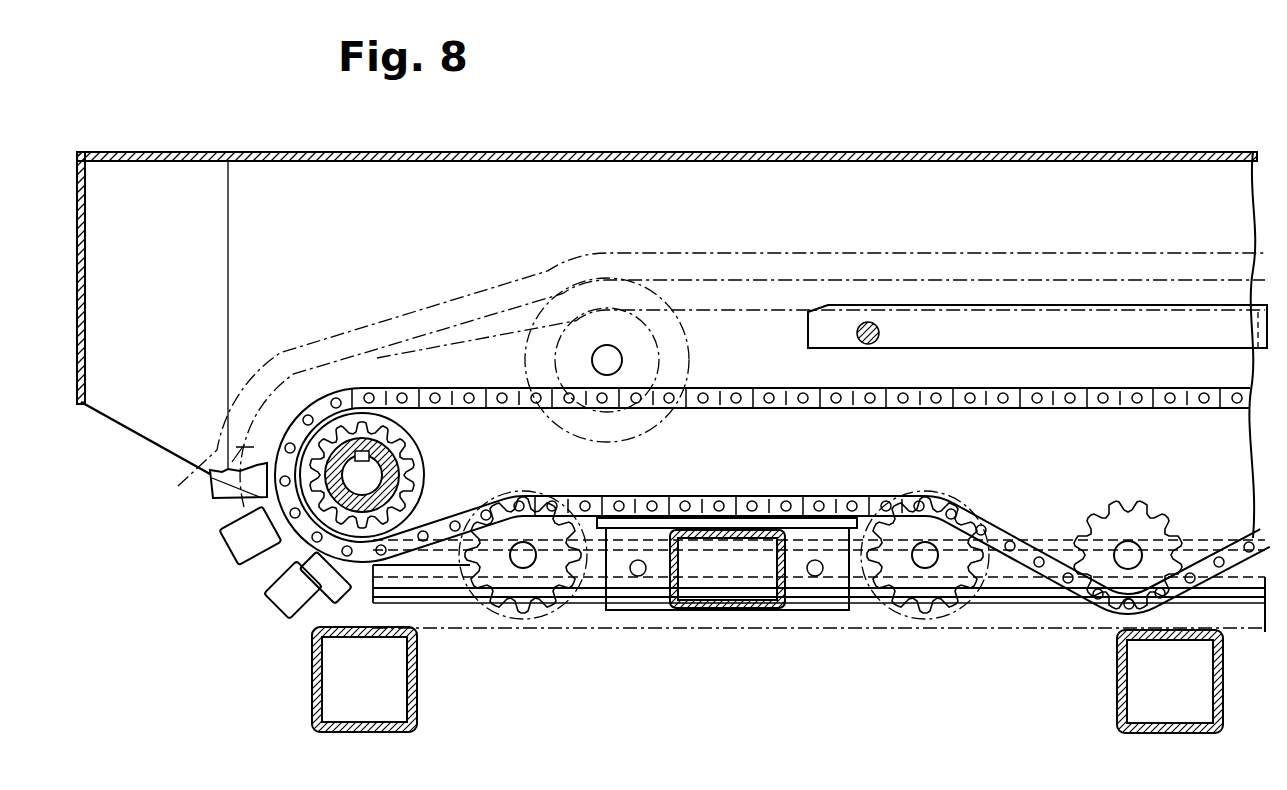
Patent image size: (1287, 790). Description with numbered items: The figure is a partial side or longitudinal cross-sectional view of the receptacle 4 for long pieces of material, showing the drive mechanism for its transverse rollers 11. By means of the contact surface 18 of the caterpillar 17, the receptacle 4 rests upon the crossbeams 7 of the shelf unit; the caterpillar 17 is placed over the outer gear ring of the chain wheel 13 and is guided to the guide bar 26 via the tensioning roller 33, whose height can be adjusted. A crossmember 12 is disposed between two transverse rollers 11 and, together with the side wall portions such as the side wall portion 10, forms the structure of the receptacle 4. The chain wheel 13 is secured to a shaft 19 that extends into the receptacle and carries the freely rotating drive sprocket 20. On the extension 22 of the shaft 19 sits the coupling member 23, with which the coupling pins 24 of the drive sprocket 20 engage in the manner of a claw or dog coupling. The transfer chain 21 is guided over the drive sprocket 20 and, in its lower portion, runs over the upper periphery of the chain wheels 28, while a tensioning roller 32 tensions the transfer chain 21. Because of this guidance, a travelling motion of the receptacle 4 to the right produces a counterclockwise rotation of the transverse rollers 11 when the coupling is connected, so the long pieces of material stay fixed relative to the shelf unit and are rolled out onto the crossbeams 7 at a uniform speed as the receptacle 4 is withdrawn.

The receptacle 4 is at (886, 150).
The crossbeams 7 is at (312, 678).
The side wall portion 10 is at (693, 178).
The transverse rollers 11 is at (525, 620).
The crossmember 12 is at (757, 610).
The chain wheel 13 is at (210, 470).
The caterpillar 17 is at (233, 537).
The contact surface 18 is at (480, 628).
The shaft 19 is at (318, 394).
The drive sprocket 20 is at (390, 420).
The transfer chain 21 is at (517, 390).
The extension 22 is at (290, 570).
The coupling member 23 is at (347, 447).
The coupling pin 24 is at (313, 585).
The guide bar 26 is at (1067, 325).
The chain wheels 28 is at (540, 582).
The tensioning roller 32 is at (1103, 557).
The tensioning roller 33 is at (533, 327).